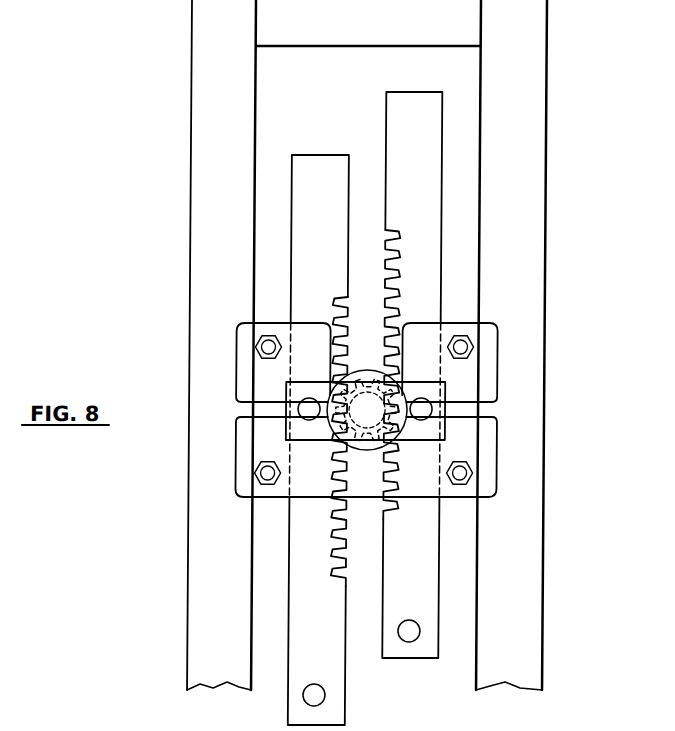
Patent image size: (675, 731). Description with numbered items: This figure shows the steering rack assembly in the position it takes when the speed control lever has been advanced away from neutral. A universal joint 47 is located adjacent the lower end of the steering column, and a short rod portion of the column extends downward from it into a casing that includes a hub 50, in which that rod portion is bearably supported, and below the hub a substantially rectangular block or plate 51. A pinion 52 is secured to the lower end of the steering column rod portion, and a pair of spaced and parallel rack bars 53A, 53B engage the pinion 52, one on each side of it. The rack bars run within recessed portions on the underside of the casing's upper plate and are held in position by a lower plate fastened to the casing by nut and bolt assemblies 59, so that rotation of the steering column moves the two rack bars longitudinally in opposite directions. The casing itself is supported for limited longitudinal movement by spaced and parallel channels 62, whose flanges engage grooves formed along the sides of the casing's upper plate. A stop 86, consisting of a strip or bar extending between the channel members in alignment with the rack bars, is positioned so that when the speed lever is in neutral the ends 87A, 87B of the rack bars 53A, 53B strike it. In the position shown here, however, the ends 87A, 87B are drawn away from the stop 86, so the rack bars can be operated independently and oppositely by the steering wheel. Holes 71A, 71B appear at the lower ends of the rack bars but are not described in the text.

The stop 86 is at (473, 29).
The channel 62 is at (196, 109).
The end of rack bar 87A is at (314, 137).
The end of rack bar 87B is at (409, 92).
The rack bar 53A is at (292, 612).
The rack bar 53B is at (437, 610).
The pivot hole 71A is at (309, 700).
The pivot hole 71B is at (414, 642).
The hub 50 is at (476, 400).
The rectangular block or plate 51 is at (488, 445).
The universal joint 47 is at (450, 418).
The pinion 52 is at (370, 440).
The nut and bolt assemblies 59 is at (476, 473).